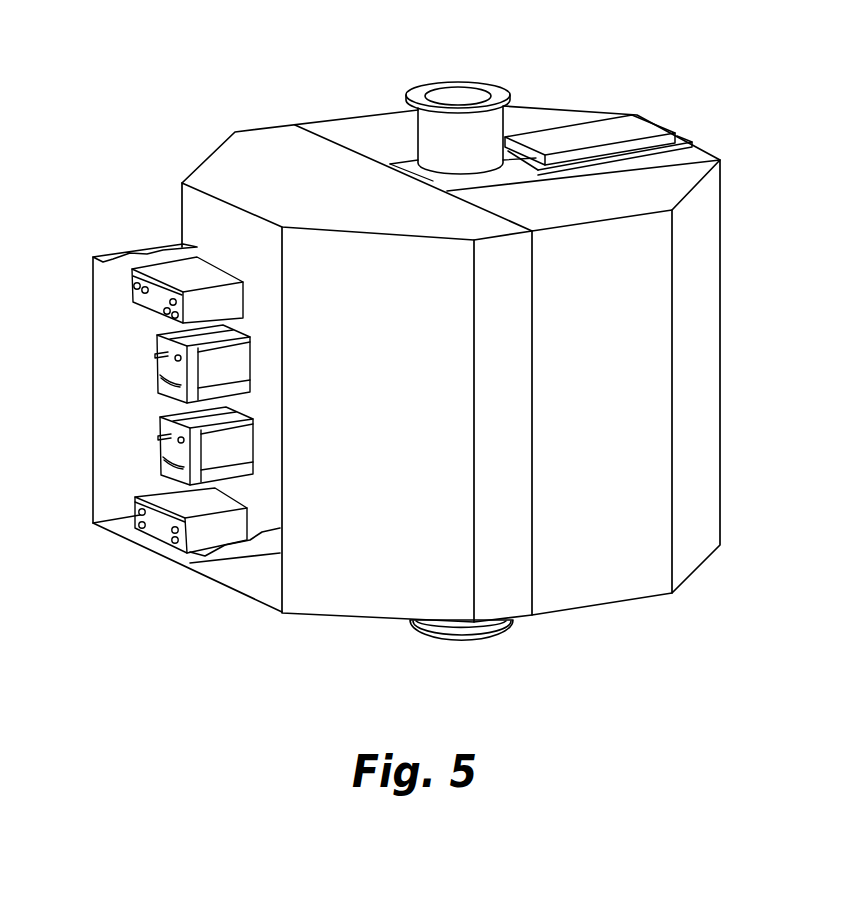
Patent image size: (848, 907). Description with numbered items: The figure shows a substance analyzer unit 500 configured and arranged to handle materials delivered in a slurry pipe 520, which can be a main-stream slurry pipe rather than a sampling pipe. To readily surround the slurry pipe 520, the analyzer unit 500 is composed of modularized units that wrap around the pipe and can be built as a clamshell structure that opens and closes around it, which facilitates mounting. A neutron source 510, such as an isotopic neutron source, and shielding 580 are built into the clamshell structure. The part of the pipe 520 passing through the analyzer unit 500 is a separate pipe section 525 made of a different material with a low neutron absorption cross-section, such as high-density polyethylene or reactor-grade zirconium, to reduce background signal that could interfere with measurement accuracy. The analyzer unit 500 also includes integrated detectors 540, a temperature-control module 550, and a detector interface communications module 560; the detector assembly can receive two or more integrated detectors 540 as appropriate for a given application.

The substance analyzer unit 500 is at (143, 45).
The neutron source 510 is at (675, 133).
The slurry pipe 520 is at (508, 93).
The pipe section 525 is at (408, 160).
The integrated detectors 540 is at (158, 373).
The temperature-control module 550 is at (135, 515).
The detector interface communications module 560 is at (132, 298).
The shielding 580 is at (210, 153).